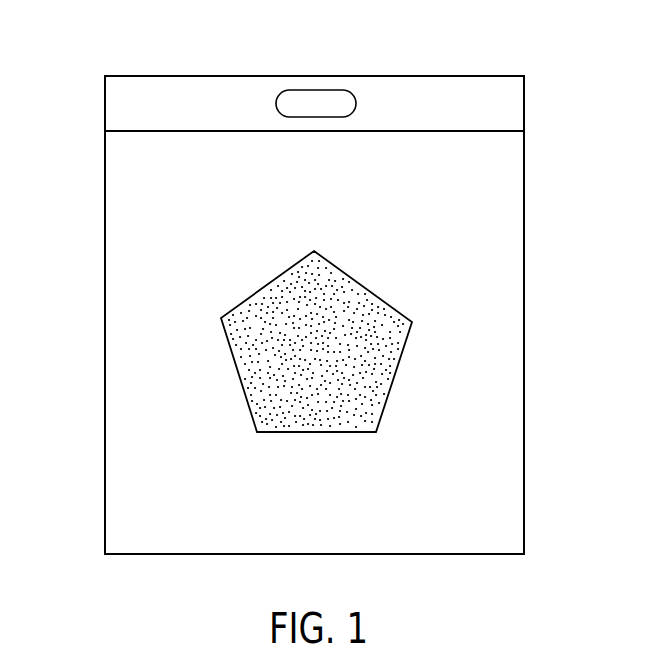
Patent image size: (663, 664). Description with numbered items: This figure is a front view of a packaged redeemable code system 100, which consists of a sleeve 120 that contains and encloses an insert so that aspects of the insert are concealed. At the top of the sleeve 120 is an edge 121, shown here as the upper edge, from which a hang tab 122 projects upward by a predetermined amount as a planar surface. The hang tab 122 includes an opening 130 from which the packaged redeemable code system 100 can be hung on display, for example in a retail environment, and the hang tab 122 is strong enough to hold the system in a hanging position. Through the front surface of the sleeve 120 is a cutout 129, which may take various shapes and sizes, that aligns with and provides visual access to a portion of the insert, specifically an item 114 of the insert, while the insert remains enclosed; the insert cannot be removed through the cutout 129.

The packaged redeemable code system 100 is at (78, 119).
The sleeve 120 is at (110, 224).
The edge 121 is at (524, 131).
The hang tab 122 is at (336, 77).
The opening 130 is at (298, 105).
The item 114 is at (366, 304).
The cutout 129 is at (386, 403).